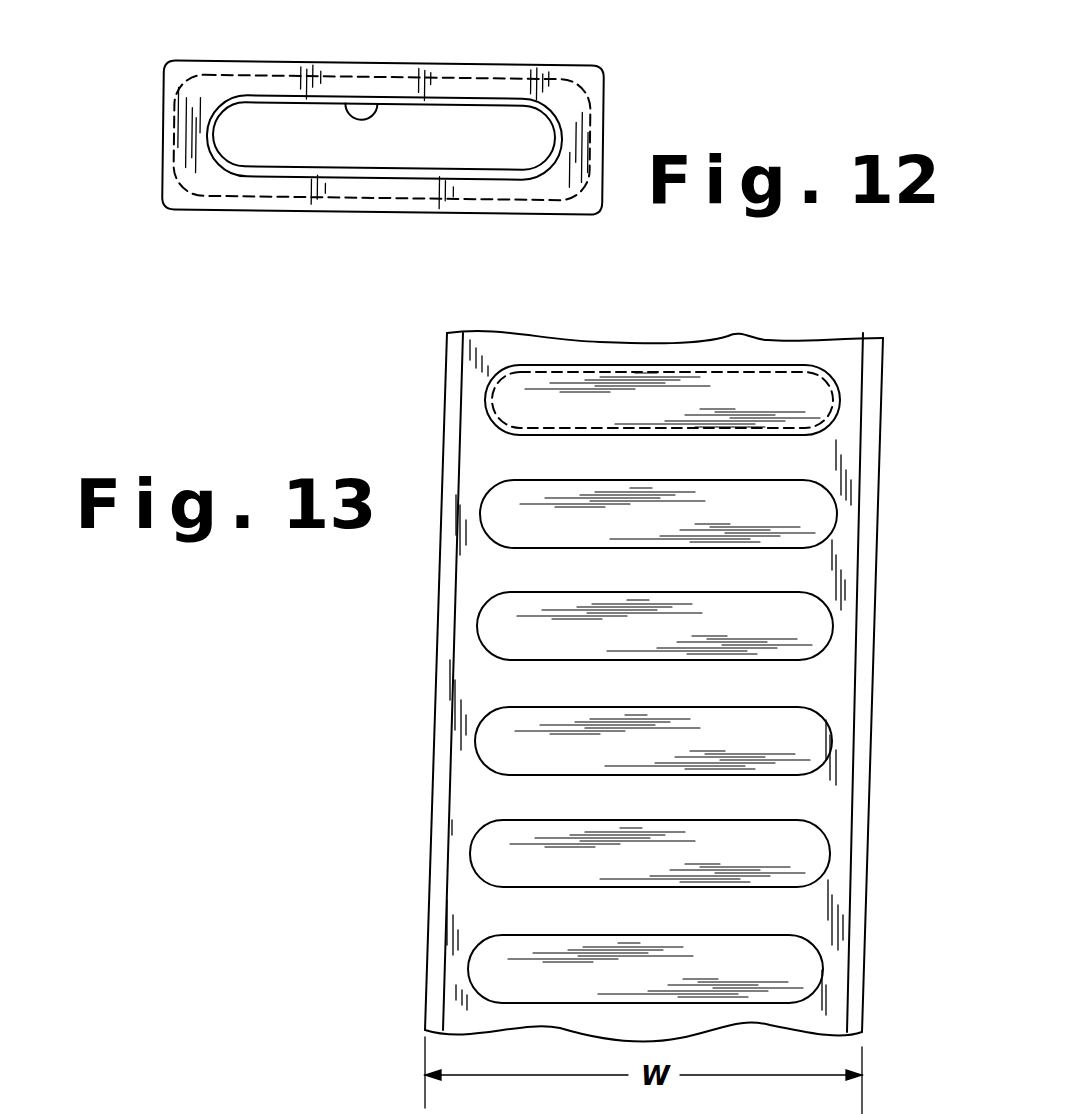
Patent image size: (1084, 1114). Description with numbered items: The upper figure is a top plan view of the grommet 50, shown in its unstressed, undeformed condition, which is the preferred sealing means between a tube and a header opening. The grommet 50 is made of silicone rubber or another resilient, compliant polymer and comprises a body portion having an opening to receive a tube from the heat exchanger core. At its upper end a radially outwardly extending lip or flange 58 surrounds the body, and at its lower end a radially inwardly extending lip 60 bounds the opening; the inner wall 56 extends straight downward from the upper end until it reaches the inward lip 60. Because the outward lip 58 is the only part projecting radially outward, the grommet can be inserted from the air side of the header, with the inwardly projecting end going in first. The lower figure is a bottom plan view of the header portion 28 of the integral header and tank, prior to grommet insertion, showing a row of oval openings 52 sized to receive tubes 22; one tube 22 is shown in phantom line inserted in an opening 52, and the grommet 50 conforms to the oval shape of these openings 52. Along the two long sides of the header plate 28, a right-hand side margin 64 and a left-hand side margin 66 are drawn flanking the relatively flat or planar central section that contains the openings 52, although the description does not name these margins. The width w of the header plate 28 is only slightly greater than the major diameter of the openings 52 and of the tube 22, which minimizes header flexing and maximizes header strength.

In FIG. 12, the grommet 50 is at (527, 62).
In FIG. 12, the inner wall 56 is at (372, 104).
In FIG. 12, the outward lip 58 is at (596, 89).
In FIG. 12, the inward lip 60 is at (212, 133).
In FIG. 13, the header portion 28 is at (733, 333).
In FIG. 13, the tube 22 is at (777, 432).
In FIG. 13, the oval opening 52 is at (545, 432).
In FIG. 13, the right margin 64 is at (871, 480).
In FIG. 13, the left margin 66 is at (446, 612).